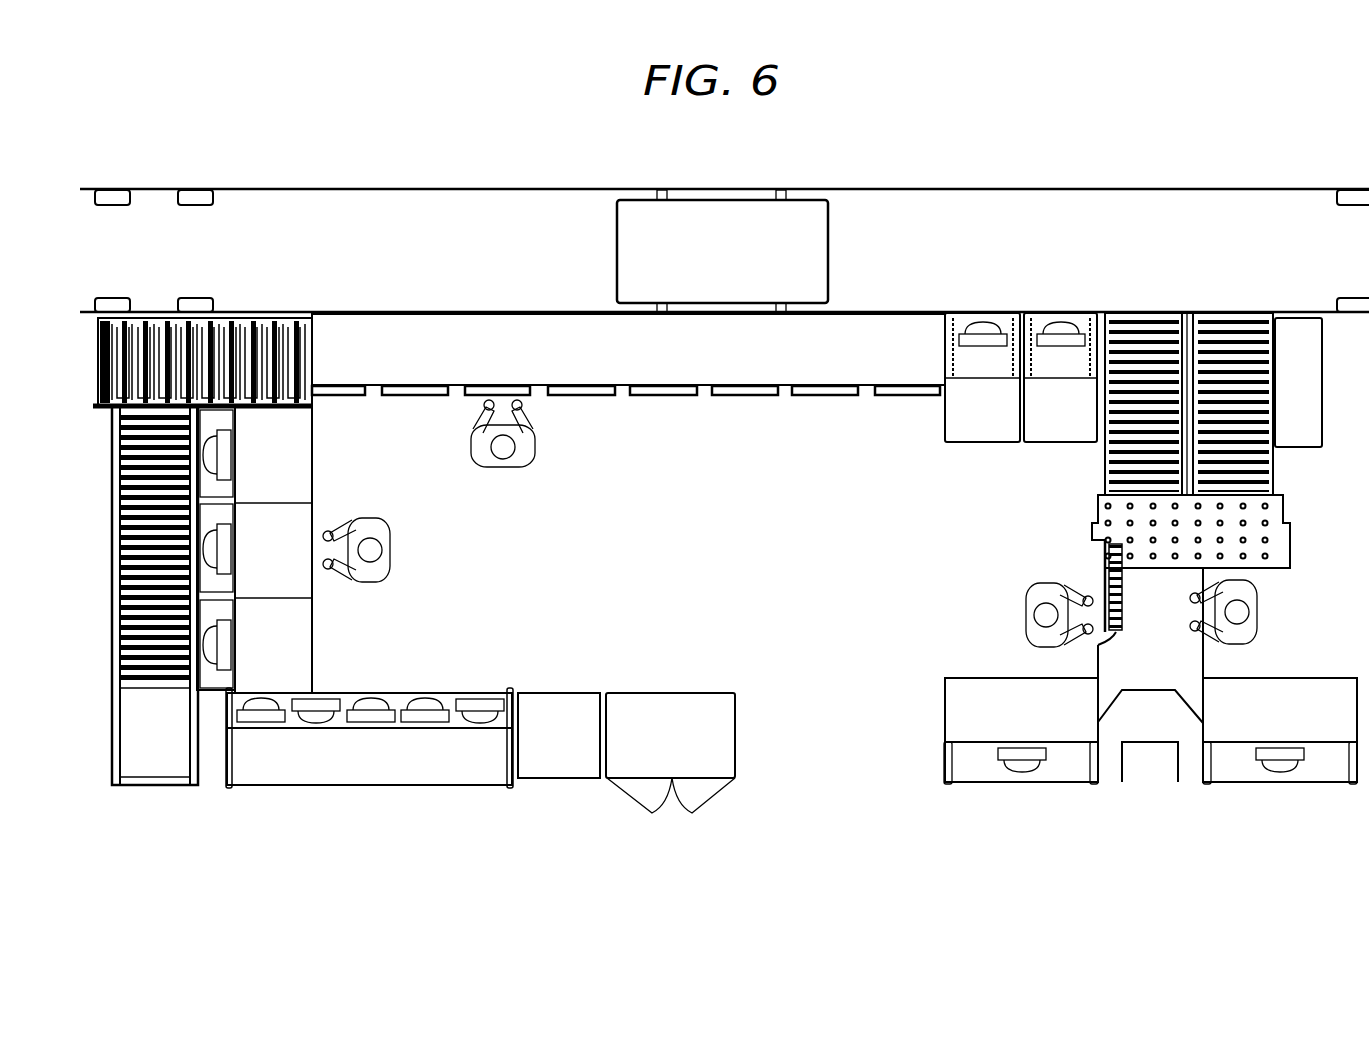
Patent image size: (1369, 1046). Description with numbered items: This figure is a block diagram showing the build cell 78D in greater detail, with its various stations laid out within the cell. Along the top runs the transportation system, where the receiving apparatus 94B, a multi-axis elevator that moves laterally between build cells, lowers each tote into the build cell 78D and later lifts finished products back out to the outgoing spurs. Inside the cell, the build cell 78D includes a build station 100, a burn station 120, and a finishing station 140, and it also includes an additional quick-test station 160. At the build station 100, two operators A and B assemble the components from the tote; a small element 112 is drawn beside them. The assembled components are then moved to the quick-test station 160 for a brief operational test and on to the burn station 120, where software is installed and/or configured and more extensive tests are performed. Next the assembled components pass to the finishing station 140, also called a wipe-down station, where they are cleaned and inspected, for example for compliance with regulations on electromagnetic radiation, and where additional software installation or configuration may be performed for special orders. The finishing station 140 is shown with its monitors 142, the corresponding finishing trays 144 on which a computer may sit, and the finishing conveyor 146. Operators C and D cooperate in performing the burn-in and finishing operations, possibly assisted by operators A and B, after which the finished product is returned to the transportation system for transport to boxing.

The build cell 78D is at (1022, 158).
The receiving apparatus 94B is at (710, 190).
The burn station 120 is at (622, 420).
The quick-test station 160 is at (896, 456).
The finishing conveyor 146 is at (112, 587).
The monitors 142 is at (230, 458).
The finishing trays 144 is at (310, 648).
The finishing station 140 is at (410, 612).
The build station 100 is at (983, 603).
The transfer conveyor 112 is at (1103, 590).
The operator A is at (1258, 621).
The operator B is at (1027, 620).
The operator C is at (503, 466).
The operator D is at (392, 552).